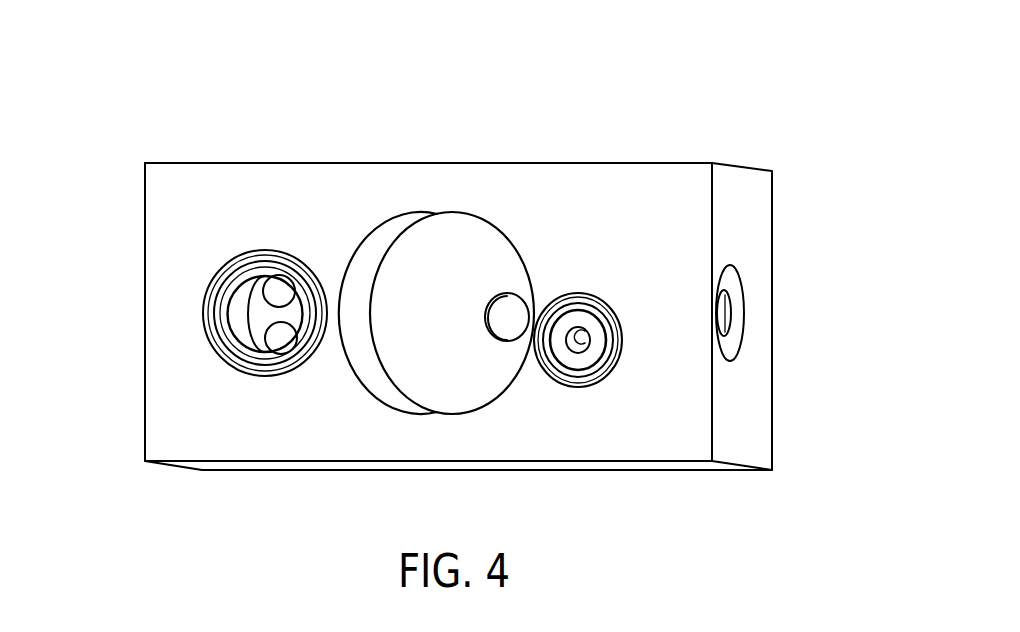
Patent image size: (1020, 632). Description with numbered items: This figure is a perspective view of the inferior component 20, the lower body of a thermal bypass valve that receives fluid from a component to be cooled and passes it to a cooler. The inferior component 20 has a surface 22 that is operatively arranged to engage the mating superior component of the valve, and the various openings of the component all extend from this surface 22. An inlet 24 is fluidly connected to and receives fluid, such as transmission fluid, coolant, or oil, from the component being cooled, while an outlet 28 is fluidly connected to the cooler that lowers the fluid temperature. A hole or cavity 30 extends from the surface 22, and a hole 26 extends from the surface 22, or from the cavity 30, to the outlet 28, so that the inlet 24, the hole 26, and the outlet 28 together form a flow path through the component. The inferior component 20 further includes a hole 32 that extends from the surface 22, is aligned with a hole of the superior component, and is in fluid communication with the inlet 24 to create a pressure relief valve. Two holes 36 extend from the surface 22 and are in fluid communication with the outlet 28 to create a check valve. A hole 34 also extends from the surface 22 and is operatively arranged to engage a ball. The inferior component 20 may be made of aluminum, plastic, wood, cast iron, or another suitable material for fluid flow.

The inferior component 20 is at (713, 100).
The surface 22 is at (570, 178).
The inlet 24 is at (732, 308).
The hole 26 is at (502, 294).
The outlet 28 is at (498, 336).
The hole or cavity 30 is at (472, 216).
The hole 32 is at (579, 352).
The hole 34 is at (237, 292).
The hole 36 is at (260, 290).